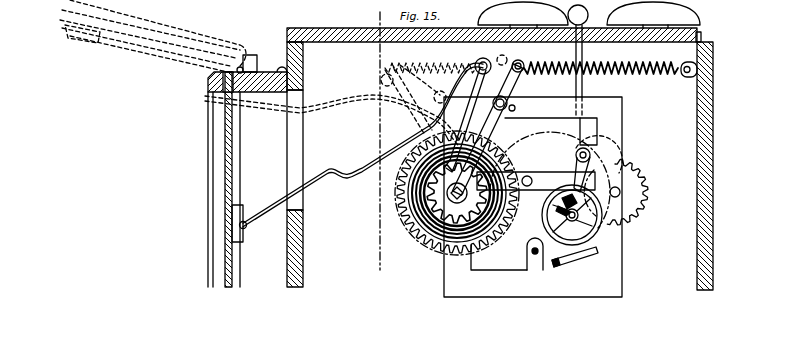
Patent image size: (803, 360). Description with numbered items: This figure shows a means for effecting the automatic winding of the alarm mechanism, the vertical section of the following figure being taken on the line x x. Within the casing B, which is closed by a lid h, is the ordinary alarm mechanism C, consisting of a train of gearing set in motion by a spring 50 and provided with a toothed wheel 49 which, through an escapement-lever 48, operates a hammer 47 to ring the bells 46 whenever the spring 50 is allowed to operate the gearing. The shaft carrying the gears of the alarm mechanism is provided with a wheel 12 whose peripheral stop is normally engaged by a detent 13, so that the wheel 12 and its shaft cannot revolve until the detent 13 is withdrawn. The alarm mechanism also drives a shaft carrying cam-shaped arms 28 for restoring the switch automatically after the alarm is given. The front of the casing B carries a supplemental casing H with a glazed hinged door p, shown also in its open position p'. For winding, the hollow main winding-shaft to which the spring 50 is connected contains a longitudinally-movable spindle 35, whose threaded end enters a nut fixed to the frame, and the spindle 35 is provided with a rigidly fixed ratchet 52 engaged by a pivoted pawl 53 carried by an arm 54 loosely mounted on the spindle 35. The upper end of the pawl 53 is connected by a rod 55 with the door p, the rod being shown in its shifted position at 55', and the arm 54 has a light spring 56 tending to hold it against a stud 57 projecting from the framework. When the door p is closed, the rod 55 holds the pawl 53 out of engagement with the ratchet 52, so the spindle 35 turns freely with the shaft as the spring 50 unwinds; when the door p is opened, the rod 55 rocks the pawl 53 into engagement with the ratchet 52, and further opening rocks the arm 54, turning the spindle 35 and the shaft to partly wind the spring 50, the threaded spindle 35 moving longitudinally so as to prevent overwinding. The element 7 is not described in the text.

The lid h is at (350, 28).
The casing B is at (303, 271).
The bells 46 is at (589, 15).
The hammer 47 is at (582, 75).
The light spring 56 is at (666, 64).
The supplemental casing H is at (262, 72).
The door p is at (219, 179).
The bar in alternate position p' is at (153, 36).
The rod in alternate position 55' is at (330, 100).
The section line x is at (377, 142).
The alarm mechanism C is at (533, 197).
The spring 50 is at (428, 238).
The ratchet 52 is at (463, 222).
The spindle 35 is at (464, 180).
The rod 55 is at (363, 145).
The pawl 53 is at (467, 115).
The arm 54 is at (489, 127).
The stud 57 is at (516, 110).
The wheel 12 is at (543, 188).
The pawl 7 is at (570, 205).
The escapement-lever 48 is at (618, 148).
The toothed wheel 49 is at (616, 192).
The cam-shaped arms 28 is at (535, 262).
The detent 13 is at (592, 262).